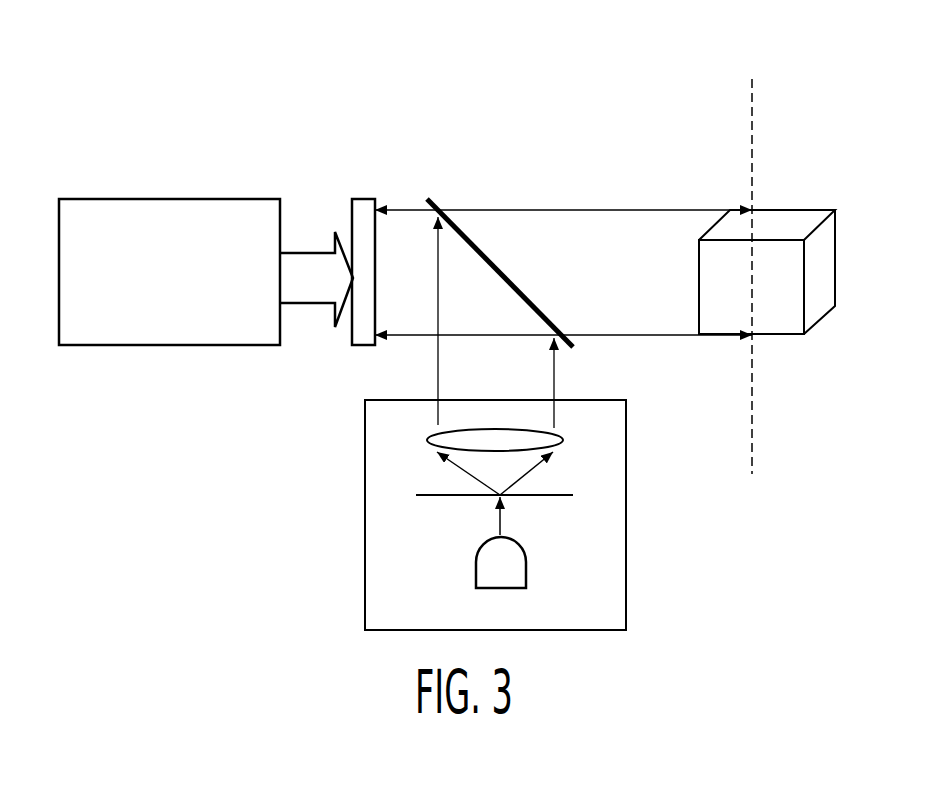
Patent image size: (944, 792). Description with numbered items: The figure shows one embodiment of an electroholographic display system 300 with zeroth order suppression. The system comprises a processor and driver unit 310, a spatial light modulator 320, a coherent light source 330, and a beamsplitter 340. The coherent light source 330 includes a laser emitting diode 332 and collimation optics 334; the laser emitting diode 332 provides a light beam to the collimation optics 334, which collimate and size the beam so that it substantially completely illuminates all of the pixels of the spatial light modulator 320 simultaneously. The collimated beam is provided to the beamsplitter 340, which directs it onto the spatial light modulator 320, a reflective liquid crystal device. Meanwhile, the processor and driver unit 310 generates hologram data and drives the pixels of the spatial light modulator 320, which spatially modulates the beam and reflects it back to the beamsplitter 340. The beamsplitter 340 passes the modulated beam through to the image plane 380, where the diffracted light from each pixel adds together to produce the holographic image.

The electroholographic display system 300 is at (647, 46).
The processor and driver unit 310 is at (163, 199).
The spatial light modulator 320 is at (363, 199).
The coherent light source 330 is at (365, 530).
The laser emitting diode 332 is at (526, 570).
The collimation optics 334 is at (427, 442).
The beamsplitter 340 is at (480, 247).
The image plane 380 is at (752, 79).